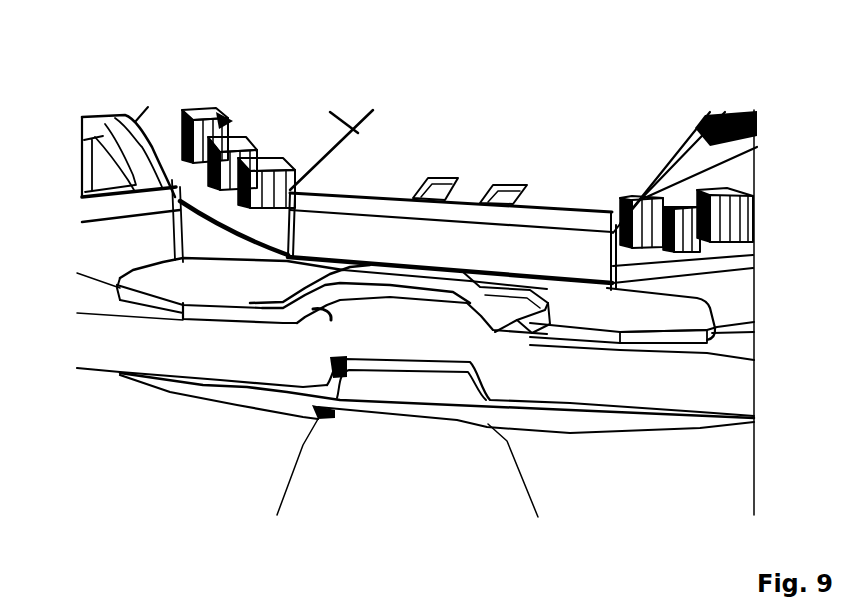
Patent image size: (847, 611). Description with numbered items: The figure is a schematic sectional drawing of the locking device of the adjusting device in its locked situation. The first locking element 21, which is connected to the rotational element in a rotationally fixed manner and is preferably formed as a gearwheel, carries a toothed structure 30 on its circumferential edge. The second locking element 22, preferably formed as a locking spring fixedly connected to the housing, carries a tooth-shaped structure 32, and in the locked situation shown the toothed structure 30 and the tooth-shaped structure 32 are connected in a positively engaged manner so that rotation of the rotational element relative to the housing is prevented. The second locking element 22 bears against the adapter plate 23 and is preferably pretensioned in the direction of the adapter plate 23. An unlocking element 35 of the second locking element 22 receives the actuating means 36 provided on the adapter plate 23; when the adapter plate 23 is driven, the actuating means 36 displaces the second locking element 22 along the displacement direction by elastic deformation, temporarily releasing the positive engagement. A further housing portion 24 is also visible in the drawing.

The first locking element 21 is at (313, 130).
The second locking element 22 is at (600, 135).
The adapter plate 23 is at (705, 393).
The left housing bracket 24 is at (142, 231).
The toothed structure 30 is at (228, 118).
The tooth-shaped structure 32 is at (510, 191).
The unlocking element 35 is at (415, 288).
The actuating means 36 is at (385, 325).